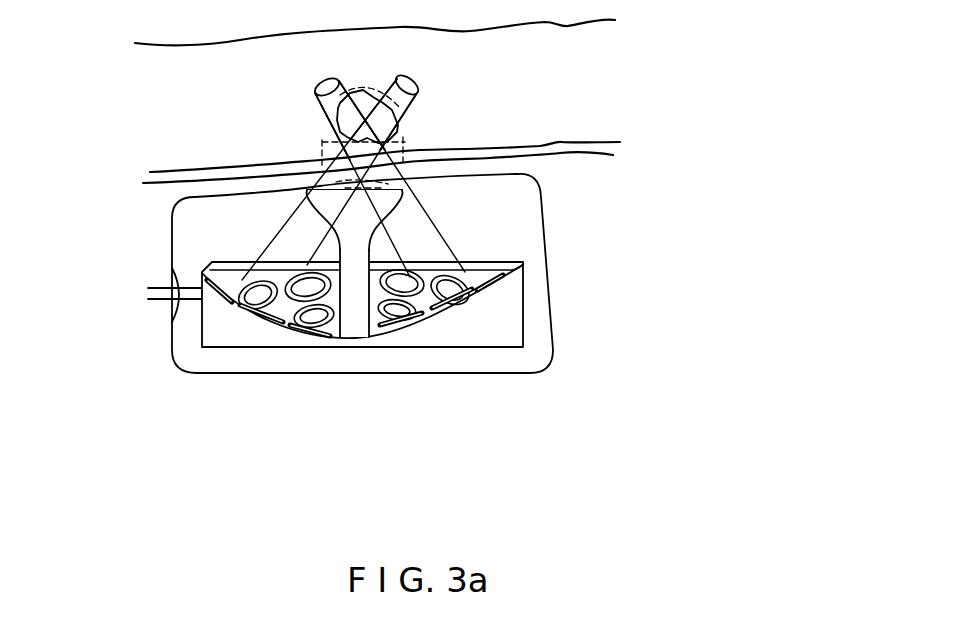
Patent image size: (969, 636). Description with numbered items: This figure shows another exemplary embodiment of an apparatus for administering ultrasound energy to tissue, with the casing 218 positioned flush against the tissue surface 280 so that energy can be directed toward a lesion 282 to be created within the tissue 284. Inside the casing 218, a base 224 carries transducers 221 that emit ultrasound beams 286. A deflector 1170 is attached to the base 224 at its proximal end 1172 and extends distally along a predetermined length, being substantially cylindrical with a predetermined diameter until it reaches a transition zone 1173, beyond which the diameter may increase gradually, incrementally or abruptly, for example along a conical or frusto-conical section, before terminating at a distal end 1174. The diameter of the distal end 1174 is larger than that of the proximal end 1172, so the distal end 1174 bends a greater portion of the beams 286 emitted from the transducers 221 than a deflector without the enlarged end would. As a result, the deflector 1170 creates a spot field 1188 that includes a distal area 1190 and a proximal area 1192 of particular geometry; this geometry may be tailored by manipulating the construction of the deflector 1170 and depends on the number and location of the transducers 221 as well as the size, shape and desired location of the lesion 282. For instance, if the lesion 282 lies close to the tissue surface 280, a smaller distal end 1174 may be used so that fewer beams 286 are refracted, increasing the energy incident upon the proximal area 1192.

The tissue 284 is at (142, 53).
The tissue surface 280 is at (140, 179).
The beams 286 is at (283, 238).
The spot field 1188 is at (310, 117).
The distal area 1190 is at (325, 130).
The lesion 282 is at (415, 118).
The proximal area 1192 is at (412, 170).
The distal end 1174 is at (392, 213).
The transition zone 1173 is at (353, 282).
The casing 218 is at (568, 331).
The base 224 is at (217, 338).
The deflector 1170 is at (348, 333).
The proximal end 1172 is at (377, 333).
The transducers 221 is at (460, 322).